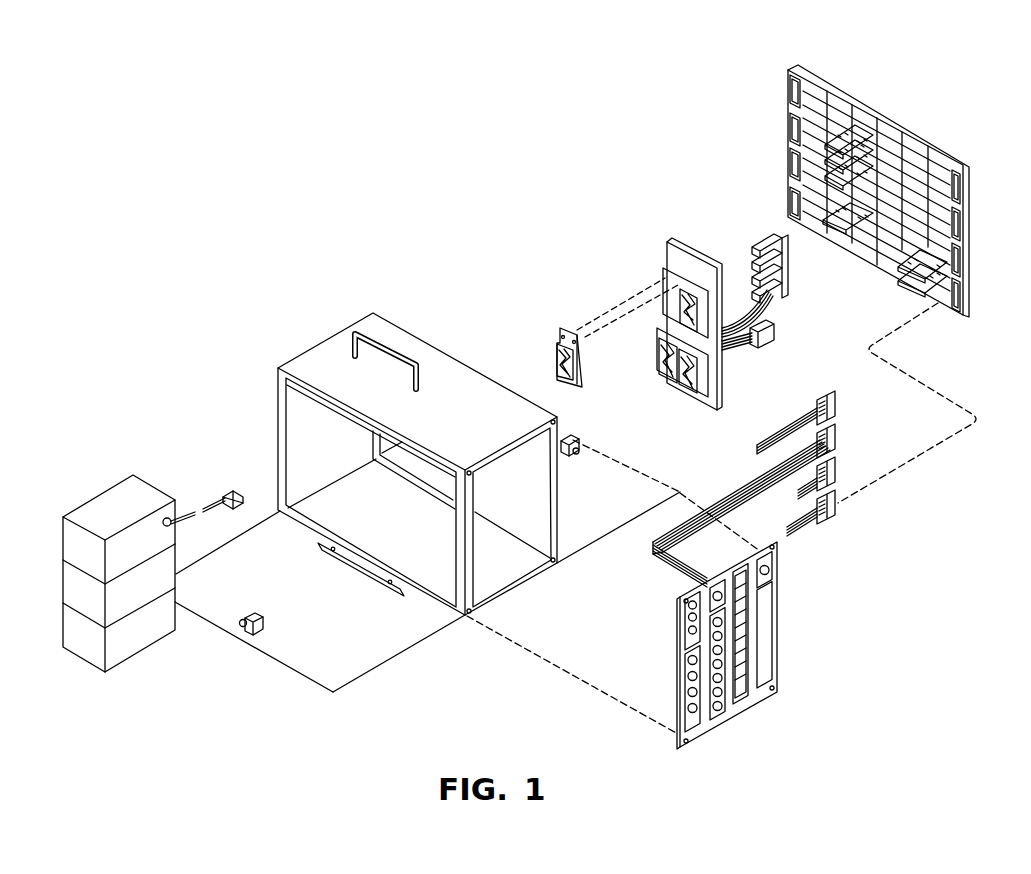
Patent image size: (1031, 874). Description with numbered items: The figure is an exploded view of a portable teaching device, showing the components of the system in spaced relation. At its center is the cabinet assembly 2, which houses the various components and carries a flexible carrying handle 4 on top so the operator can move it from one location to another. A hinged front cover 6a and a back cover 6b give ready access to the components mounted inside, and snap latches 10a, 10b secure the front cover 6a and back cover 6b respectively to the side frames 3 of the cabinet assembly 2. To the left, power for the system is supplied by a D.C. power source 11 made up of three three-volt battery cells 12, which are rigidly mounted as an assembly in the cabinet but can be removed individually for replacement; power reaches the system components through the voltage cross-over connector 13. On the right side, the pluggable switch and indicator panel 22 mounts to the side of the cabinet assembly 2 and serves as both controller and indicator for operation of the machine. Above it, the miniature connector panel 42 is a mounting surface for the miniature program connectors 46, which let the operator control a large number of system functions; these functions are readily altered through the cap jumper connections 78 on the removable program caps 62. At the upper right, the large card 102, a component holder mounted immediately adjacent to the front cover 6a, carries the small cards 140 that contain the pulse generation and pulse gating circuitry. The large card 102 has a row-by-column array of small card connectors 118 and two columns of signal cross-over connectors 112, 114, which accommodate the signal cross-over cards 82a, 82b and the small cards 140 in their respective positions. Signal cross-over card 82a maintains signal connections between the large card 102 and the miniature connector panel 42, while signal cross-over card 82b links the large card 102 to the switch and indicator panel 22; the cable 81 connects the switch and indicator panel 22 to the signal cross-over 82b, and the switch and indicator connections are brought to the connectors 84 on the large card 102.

The cabinet assembly 2 is at (305, 351).
The side frames 3 is at (395, 511).
The flexible carrying handle 4 is at (387, 347).
The hinged front cover 6a is at (581, 547).
The back cover 6b is at (390, 660).
The snap latch 10a is at (578, 440).
The snap latch 10b is at (245, 625).
The power source 11 is at (108, 488).
The battery cells 12 is at (67, 552).
The voltage cross-over connector 13 is at (228, 487).
The pluggable switch and indicator panel 22 is at (778, 643).
The miniature connector panel 42 is at (682, 242).
The miniature program connectors 46 is at (703, 382).
The program caps 62 is at (560, 332).
The cap jumper connections 78 is at (555, 363).
The cable 81 is at (747, 487).
The signal cross-over card 82a is at (775, 296).
The signal cross-over card 82b is at (837, 510).
The connectors 84 is at (892, 238).
The large card 102 is at (970, 180).
The signal cross-over connectors 112 is at (792, 118).
The signal cross-over connectors 114 is at (960, 273).
The small card connectors 118 is at (910, 143).
The small cards 140 is at (828, 193).